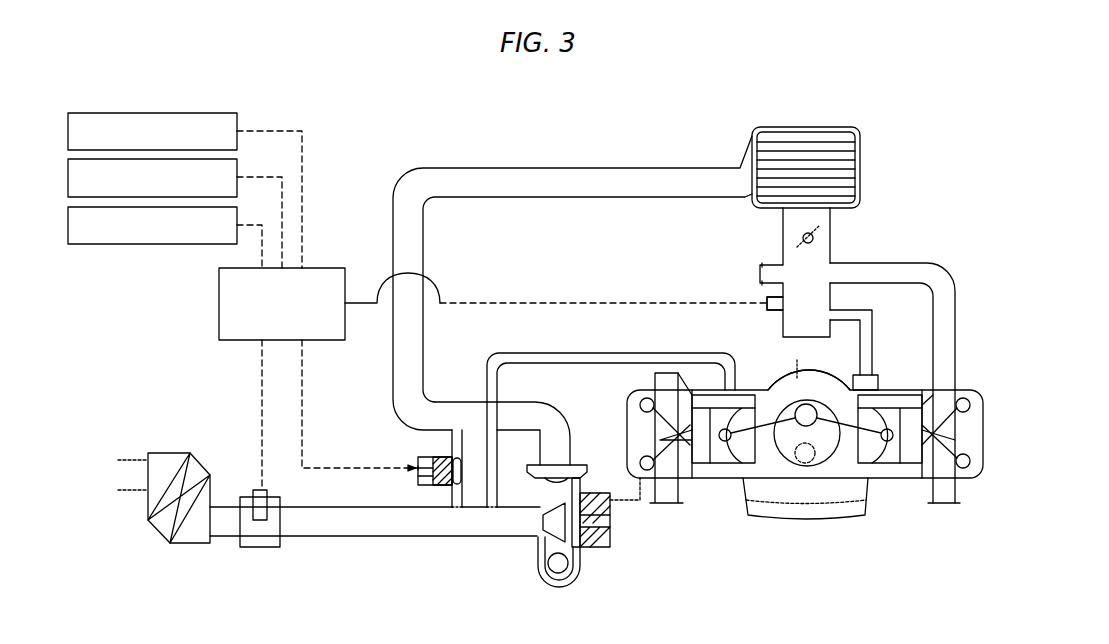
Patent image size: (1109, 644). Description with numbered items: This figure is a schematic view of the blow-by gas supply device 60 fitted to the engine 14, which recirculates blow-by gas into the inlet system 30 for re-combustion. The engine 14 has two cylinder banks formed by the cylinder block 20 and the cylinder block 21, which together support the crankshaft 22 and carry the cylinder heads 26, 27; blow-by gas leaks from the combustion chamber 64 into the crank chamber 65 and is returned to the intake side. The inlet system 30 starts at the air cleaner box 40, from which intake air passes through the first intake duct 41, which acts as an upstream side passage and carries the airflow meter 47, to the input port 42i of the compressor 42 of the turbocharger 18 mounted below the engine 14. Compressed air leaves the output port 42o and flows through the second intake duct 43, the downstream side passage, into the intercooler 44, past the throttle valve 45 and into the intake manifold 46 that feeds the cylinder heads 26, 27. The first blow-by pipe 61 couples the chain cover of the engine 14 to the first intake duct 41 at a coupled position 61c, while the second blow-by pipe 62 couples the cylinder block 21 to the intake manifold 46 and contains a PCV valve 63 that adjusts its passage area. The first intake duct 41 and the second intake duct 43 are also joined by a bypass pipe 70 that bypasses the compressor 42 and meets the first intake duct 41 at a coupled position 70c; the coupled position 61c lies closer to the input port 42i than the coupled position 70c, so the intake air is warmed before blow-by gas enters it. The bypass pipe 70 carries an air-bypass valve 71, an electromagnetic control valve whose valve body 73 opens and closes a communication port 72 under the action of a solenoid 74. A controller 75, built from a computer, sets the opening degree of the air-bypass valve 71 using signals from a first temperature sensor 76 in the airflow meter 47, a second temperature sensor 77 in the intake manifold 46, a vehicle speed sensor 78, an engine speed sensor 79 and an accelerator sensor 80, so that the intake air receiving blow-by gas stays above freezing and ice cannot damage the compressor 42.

The engine 14 is at (803, 452).
The turbocharger 18 is at (641, 540).
The cylinder block 20 is at (793, 511).
The cylinder block 21 is at (807, 470).
The crankshaft 22 is at (795, 366).
The cylinder head 26 is at (657, 457).
The cylinder head 27 is at (952, 470).
The inlet system 30 is at (918, 101).
The air cleaner box 40 is at (164, 521).
The first intake duct 41 is at (375, 547).
The compressor 42 is at (560, 511).
The input port 42i is at (534, 564).
The output port 42o is at (567, 451).
The second intake duct 43 is at (572, 318).
The intercooler 44 is at (806, 149).
The throttle valve 45 is at (786, 272).
The intake manifold 46 is at (895, 365).
The airflow meter 47 is at (260, 544).
The blow-by gas supply device 60 is at (502, 284).
The first blow-by pipe 61 is at (611, 408).
The coupled position 61c is at (481, 537).
The second blow-by pipe 62 is at (871, 342).
The PCV valve 63 is at (885, 376).
The combustion chamber 64 is at (807, 434).
The crank chamber 65 is at (800, 367).
The bypass pipe 70 is at (426, 459).
The coupled position 70c is at (442, 539).
The air-bypass valve 71 is at (384, 482).
The communication port 72 is at (469, 460).
The valve body 73 is at (412, 492).
The solenoid 74 is at (393, 461).
The controller 75 is at (282, 286).
The first temperature sensor 76 is at (249, 486).
The second temperature sensor 77 is at (747, 316).
The vehicle speed sensor 78 is at (175, 127).
The engine speed sensor 79 is at (175, 173).
The accelerator sensor 80 is at (152, 248).